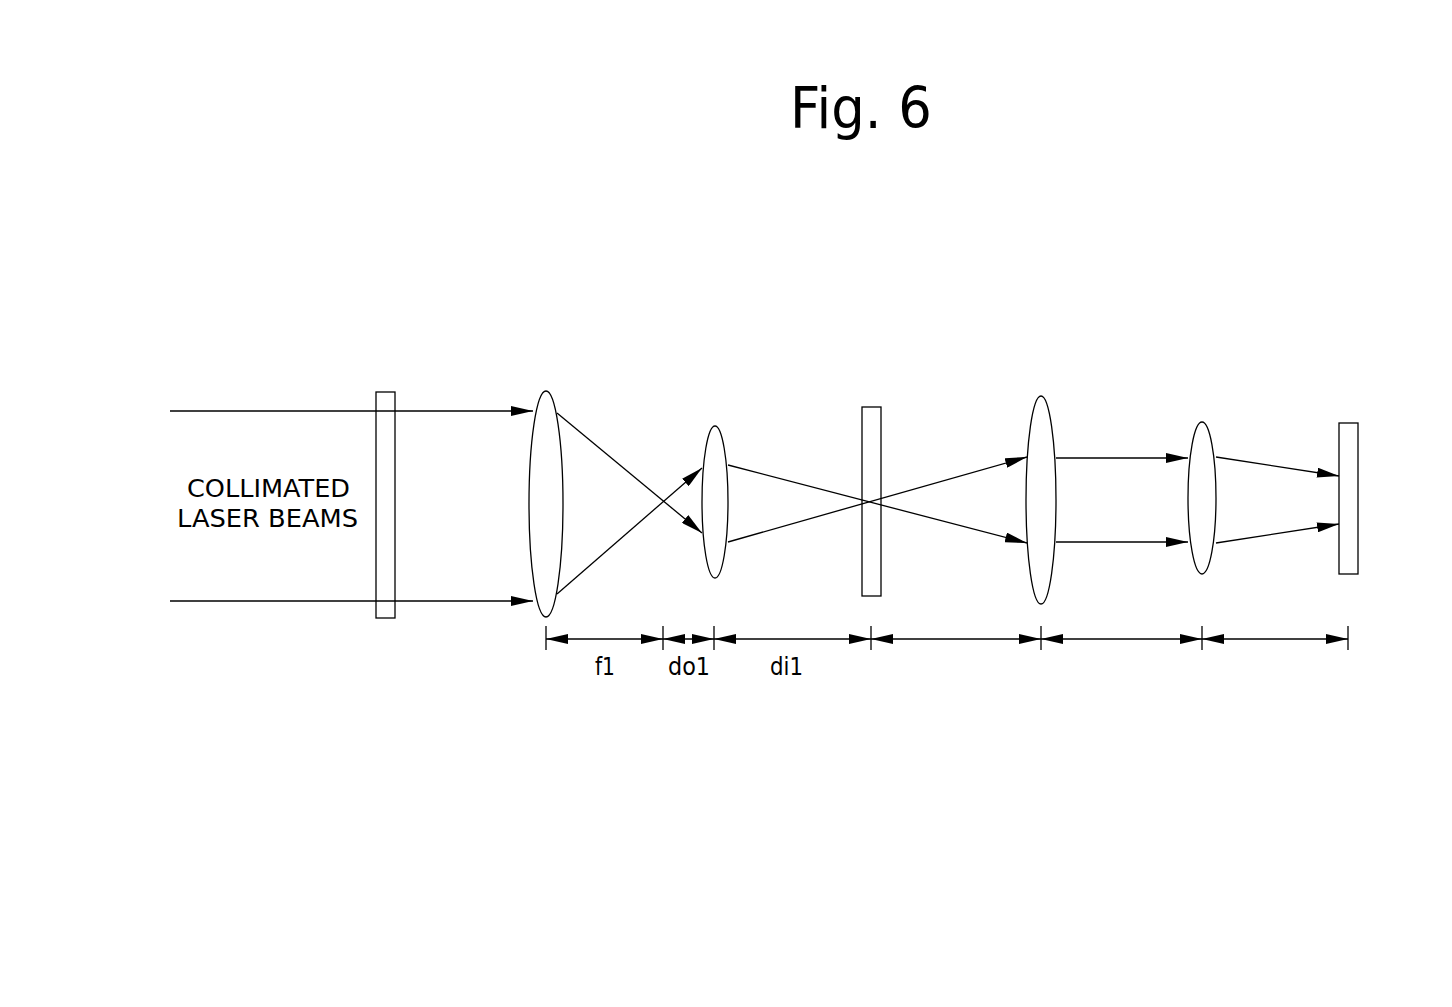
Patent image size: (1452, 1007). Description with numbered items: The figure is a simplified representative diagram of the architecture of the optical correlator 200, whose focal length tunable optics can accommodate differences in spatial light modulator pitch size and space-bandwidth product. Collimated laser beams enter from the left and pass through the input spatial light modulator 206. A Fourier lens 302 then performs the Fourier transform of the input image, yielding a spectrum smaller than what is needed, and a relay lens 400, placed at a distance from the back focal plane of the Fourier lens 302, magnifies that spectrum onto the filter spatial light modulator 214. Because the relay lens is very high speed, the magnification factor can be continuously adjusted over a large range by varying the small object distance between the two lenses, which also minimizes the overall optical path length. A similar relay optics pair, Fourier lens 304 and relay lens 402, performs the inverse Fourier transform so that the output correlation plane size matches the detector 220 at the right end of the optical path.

The input spatial light modulator 206 is at (388, 283).
The Fourier lens 302 is at (537, 283).
The relay lens 400 is at (713, 283).
The filter spatial light modulator 214 is at (863, 280).
The Fourier lens 304 is at (1042, 280).
The relay lens 402 is at (1192, 280).
The detector 220 is at (1352, 307).
The optical correlator 200 is at (840, 700).